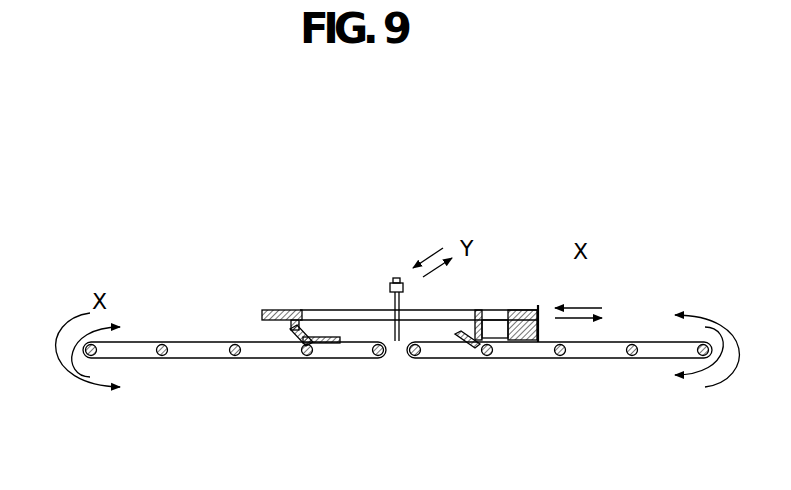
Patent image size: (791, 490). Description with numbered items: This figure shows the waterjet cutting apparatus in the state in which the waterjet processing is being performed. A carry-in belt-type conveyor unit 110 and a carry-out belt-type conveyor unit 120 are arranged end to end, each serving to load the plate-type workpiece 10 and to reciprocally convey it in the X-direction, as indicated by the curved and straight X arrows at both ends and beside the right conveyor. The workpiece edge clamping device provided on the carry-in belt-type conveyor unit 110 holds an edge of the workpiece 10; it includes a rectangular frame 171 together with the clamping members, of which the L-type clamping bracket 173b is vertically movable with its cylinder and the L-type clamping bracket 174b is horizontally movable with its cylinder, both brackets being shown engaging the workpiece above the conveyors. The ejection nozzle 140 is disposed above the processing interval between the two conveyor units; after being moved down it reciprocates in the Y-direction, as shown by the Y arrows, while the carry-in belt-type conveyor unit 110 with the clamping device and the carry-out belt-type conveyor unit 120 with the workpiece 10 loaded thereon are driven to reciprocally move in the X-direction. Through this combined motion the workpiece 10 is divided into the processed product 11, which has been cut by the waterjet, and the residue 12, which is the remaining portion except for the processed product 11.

The plate-type workpiece 10 is at (406, 242).
The processed product 11 is at (380, 310).
The residue 12 is at (345, 319).
The carry-in belt-type conveyor unit 110 is at (582, 360).
The carry-out belt-type conveyor unit 120 is at (195, 363).
The ejection nozzle 140 is at (402, 322).
The rectangular frame 171 is at (277, 309).
The L-type clamping bracket 173b is at (319, 345).
The L-type clamping bracket 174b is at (480, 358).